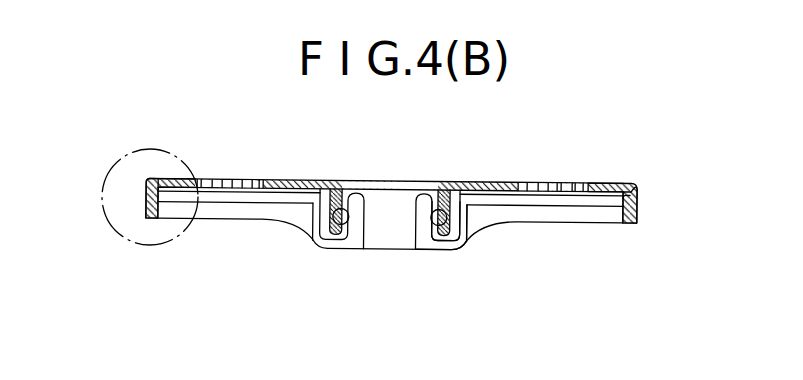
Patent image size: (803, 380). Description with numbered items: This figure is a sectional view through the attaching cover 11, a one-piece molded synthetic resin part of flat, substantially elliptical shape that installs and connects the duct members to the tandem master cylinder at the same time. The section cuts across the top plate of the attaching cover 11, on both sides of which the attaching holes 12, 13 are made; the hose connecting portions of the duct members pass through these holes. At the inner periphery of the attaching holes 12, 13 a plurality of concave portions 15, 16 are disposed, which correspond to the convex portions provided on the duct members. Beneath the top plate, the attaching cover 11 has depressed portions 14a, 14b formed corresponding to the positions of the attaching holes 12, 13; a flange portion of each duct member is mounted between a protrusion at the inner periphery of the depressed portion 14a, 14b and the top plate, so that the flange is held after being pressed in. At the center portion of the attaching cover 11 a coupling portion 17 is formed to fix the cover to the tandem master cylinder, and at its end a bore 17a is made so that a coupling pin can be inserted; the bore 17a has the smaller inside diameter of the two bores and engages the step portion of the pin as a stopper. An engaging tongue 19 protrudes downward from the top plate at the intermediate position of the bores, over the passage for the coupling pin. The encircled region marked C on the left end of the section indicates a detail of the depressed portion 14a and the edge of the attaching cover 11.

The attaching cover 11 is at (616, 182).
The attaching hole 12 is at (280, 181).
The attaching hole 13 is at (506, 187).
The depressed portion 14a is at (192, 217).
The depressed portion 14b is at (623, 199).
The concave portion 15 is at (191, 181).
The concave portion 16 is at (597, 183).
The coupling portion 17 is at (393, 229).
The bore 17a is at (428, 230).
The engaging tongue 19 is at (430, 184).
The detail circle C is at (158, 150).